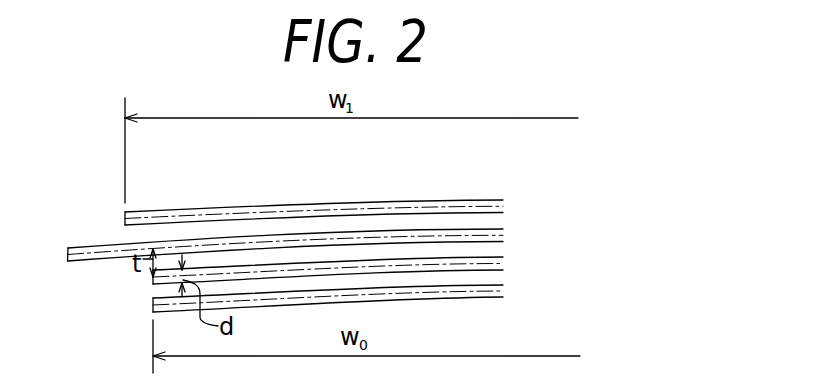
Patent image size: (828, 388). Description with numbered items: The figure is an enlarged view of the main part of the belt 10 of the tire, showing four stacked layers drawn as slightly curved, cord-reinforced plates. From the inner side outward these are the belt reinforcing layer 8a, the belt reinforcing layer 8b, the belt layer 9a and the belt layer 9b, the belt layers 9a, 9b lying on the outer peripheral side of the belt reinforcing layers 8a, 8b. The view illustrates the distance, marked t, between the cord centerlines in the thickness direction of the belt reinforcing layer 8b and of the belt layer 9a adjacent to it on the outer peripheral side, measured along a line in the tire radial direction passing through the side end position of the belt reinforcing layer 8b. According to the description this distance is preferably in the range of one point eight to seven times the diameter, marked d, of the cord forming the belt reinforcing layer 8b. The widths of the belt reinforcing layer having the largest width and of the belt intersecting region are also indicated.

The belt 10 is at (337, 196).
The belt layer 9b is at (483, 198).
The belt layer 9a is at (483, 227).
The belt reinforcing layer having the largest width 8b is at (483, 255).
The belt reinforcing layer having the largest width 8a is at (484, 297).